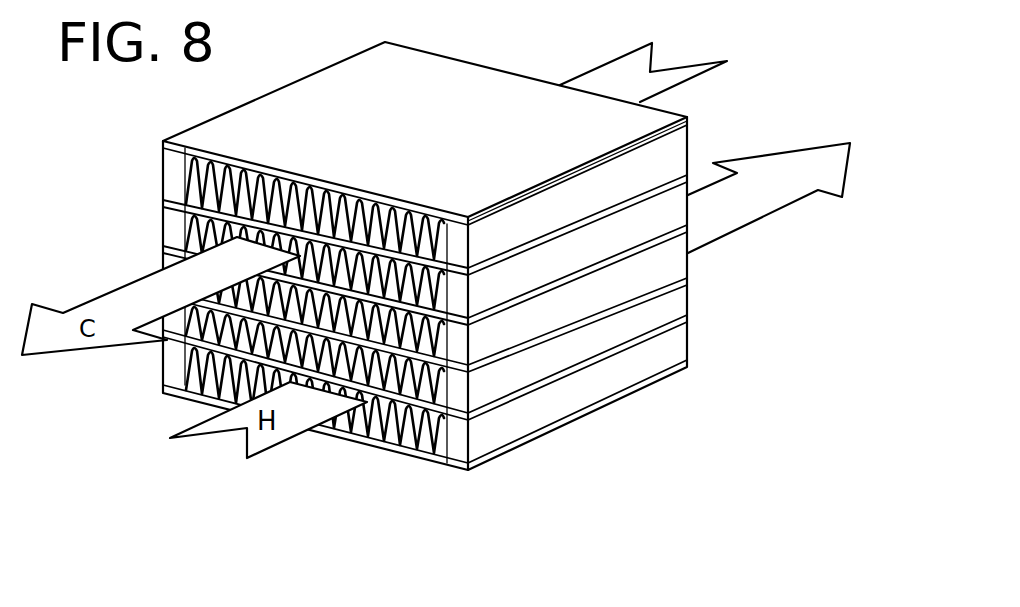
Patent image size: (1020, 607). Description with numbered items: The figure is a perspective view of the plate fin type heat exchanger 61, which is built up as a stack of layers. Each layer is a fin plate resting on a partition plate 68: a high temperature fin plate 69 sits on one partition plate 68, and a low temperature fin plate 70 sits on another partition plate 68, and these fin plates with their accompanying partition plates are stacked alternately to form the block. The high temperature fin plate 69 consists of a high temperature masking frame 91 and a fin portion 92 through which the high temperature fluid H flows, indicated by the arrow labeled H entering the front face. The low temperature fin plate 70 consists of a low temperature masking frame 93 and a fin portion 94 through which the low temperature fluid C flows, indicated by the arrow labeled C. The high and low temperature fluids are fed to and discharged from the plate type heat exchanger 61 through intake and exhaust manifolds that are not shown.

The plate type heat exchanger 61 is at (512, 68).
The high temperature fin plate 69 is at (152, 182).
The low temperature fin plate 70 is at (213, 248).
The fin portion 94 is at (168, 372).
The fin portion 92 is at (388, 428).
The low temperature masking frame 93 is at (497, 375).
The partition plate 68 is at (573, 327).
The high temperature masking frame 91 is at (632, 273).